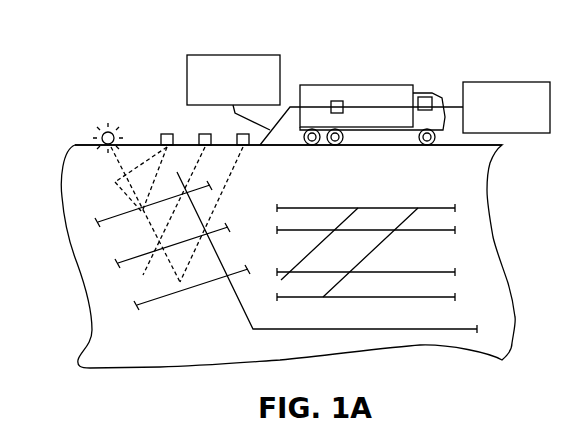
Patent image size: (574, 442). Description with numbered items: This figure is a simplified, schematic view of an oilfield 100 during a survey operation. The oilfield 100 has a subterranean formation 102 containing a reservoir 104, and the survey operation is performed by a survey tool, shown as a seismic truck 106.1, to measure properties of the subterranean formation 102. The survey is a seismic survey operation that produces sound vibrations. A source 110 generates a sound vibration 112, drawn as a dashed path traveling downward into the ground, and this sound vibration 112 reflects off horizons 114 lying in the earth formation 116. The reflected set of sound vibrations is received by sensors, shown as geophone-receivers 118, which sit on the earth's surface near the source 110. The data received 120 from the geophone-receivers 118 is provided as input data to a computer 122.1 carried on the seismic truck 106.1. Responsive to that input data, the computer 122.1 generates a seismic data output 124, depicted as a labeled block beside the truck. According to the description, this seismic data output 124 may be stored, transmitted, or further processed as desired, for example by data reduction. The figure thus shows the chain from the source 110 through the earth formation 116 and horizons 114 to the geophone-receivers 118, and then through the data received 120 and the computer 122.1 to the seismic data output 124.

The oilfield 100 is at (455, 60).
The subterranean formation 102 is at (373, 228).
The reservoir 104 is at (433, 262).
The seismic truck 106.1 is at (390, 85).
The source 110 is at (106, 128).
The sound vibration 112 is at (114, 182).
The horizons 114 is at (106, 224).
The earth formation 116 is at (242, 306).
The geophone-receivers 118 is at (242, 134).
The data received 120 is at (231, 55).
The computer 122.1 is at (339, 100).
The seismic data output 124 is at (507, 82).